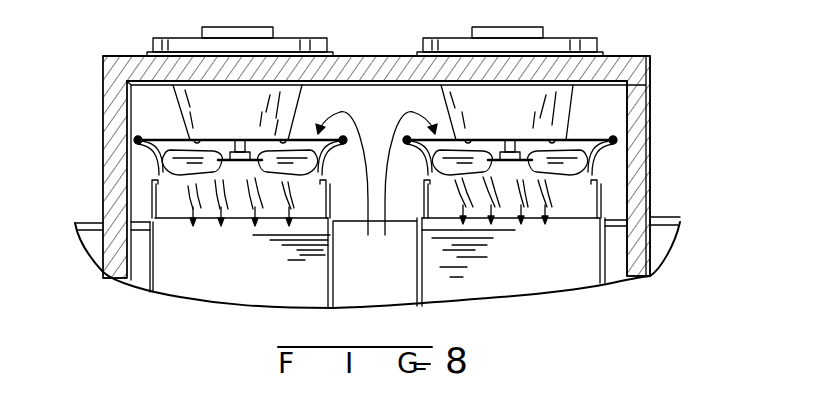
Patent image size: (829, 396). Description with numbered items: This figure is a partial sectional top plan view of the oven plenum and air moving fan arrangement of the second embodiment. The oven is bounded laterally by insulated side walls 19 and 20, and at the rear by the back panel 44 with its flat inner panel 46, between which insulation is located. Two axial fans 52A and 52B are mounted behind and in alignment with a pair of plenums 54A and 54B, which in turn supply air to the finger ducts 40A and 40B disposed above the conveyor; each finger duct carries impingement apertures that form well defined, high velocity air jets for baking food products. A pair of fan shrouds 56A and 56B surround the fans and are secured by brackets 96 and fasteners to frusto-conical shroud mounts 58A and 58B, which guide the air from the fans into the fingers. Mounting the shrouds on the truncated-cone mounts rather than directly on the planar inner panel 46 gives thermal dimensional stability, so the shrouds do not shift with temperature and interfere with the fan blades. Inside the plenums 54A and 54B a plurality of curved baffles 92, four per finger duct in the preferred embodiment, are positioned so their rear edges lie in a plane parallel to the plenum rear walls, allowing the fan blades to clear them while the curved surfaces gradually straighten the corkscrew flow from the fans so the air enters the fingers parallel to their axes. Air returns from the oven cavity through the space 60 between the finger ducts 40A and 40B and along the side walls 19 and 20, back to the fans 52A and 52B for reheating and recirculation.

The side wall 19 is at (103, 68).
The side wall 20 is at (650, 77).
The back panel 44 is at (120, 56).
The inner panel 46 is at (143, 84).
The frusto-conical shroud mount 58A is at (260, 110).
The frusto-conical shroud mount 58B is at (535, 108).
The axial fan 52A is at (205, 158).
The axial fan 52B is at (488, 132).
The fan shroud 56A is at (159, 162).
The fan shroud 56B is at (598, 154).
The plenum 54A is at (153, 195).
The plenum 54B is at (602, 190).
The baffles 92 is at (264, 197).
The finger duct 40A is at (258, 273).
The finger duct 40B is at (535, 273).
The space 60 is at (385, 273).
The brackets 96 is at (614, 136).